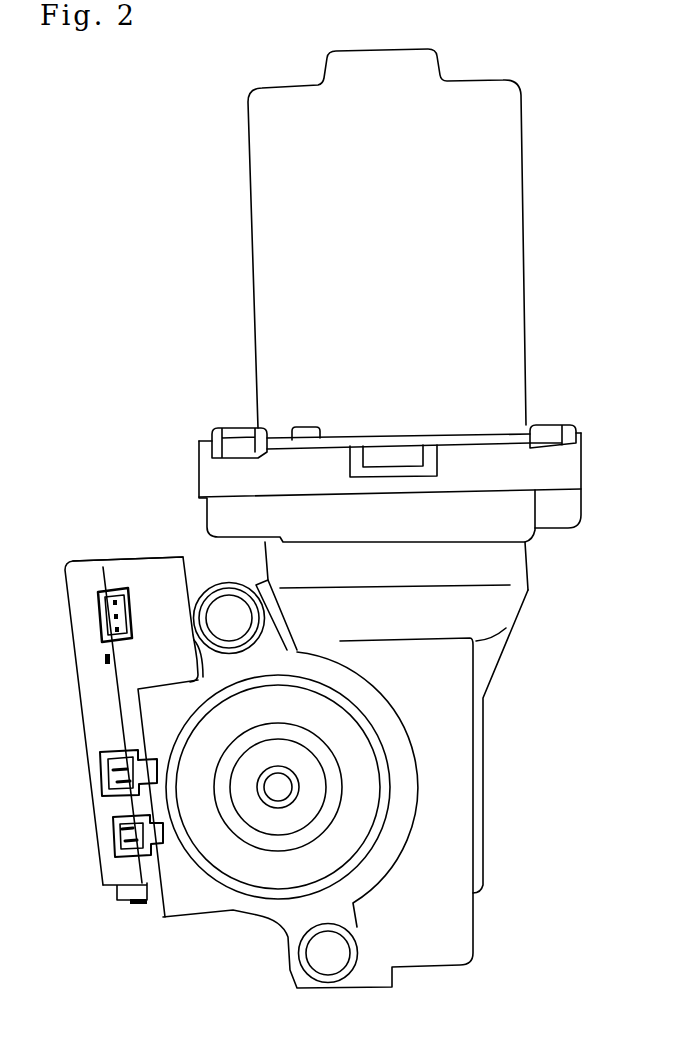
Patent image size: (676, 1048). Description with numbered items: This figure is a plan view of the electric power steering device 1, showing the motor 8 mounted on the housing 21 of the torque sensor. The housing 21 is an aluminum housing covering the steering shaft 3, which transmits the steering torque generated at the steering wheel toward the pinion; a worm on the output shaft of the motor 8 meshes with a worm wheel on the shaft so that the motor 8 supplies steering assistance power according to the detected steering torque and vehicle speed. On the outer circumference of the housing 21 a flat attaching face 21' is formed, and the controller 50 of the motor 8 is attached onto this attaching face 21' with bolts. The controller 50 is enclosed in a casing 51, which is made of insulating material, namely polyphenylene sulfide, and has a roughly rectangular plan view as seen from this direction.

The electric power steering device 1 is at (487, 743).
The motor 8 is at (495, 253).
The steering shaft 3 is at (273, 822).
The housing 21 is at (148, 867).
The attaching face 21' is at (165, 776).
The controller 50 is at (83, 562).
The casing 51 is at (142, 572).